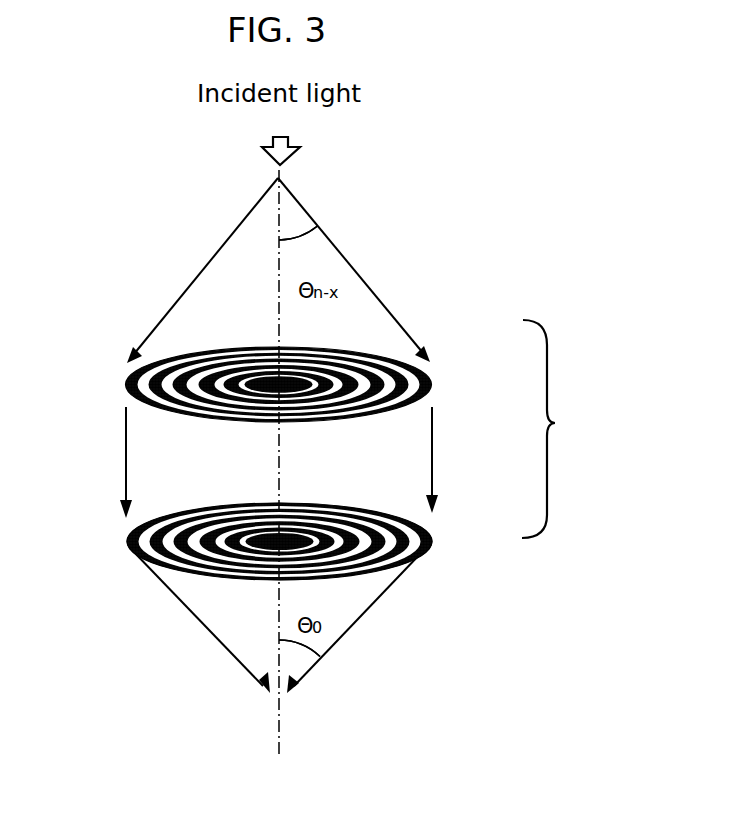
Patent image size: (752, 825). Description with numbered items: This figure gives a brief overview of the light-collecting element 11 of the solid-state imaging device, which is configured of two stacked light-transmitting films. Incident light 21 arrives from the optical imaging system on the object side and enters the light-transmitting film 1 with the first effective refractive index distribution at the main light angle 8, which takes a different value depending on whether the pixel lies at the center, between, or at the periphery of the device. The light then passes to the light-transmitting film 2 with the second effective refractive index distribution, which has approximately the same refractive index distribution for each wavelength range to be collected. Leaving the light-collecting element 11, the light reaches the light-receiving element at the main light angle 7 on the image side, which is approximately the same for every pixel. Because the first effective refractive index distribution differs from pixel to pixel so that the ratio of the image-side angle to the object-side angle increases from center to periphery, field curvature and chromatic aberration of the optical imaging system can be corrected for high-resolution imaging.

The incident light 21 is at (281, 135).
The main light angle on the optical imaging system 8 is at (293, 213).
The light-transmitting film with the first effective refractive index distribution 1 is at (412, 380).
The light-transmitting film with the second effective refractive index distribution 2 is at (412, 537).
The light-collecting element 11 is at (572, 429).
The main light angle on the light-receiving element 7 is at (297, 660).